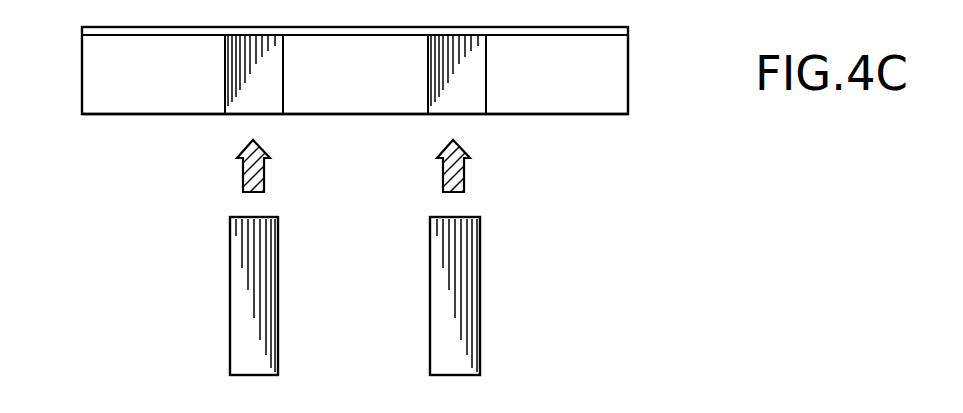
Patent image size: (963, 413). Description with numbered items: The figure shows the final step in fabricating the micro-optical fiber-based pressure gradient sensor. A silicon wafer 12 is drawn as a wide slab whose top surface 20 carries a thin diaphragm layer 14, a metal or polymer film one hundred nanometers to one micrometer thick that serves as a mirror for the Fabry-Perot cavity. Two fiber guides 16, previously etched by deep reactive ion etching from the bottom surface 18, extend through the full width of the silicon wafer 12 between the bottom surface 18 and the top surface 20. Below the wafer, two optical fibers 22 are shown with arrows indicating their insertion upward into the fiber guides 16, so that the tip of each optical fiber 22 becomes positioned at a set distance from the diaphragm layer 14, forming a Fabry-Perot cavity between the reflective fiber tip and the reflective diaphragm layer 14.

The silicon wafer 12 is at (615, 76).
The diaphragm layer 14 is at (615, 30).
The fiber guide 16 is at (258, 95).
The bottom surface 18 is at (125, 115).
The top surface 20 is at (103, 36).
The optical fiber 22 is at (278, 296).